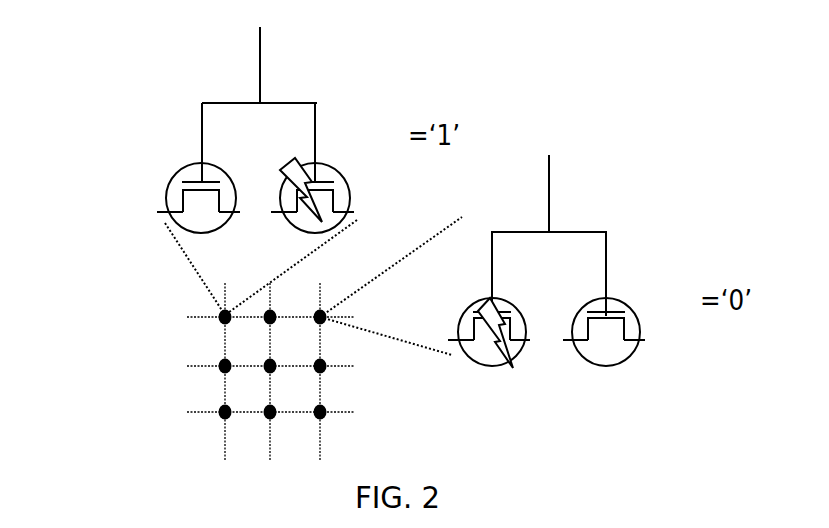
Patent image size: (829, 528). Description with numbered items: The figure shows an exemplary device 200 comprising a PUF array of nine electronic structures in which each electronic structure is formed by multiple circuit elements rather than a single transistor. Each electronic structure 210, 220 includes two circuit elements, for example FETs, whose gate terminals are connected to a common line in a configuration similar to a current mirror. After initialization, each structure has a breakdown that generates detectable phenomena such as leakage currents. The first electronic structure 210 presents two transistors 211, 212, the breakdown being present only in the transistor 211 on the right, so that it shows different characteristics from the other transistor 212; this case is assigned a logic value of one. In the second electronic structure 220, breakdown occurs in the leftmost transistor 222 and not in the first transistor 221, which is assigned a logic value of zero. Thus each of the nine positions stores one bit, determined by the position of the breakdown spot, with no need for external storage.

The device 200 is at (137, 318).
The first electronic structure 210 is at (172, 96).
The transistor 211 is at (338, 177).
The transistor 212 is at (168, 199).
The second electronic structure 220 is at (650, 223).
The first transistor 221 is at (628, 357).
The second transistor 222 is at (493, 367).